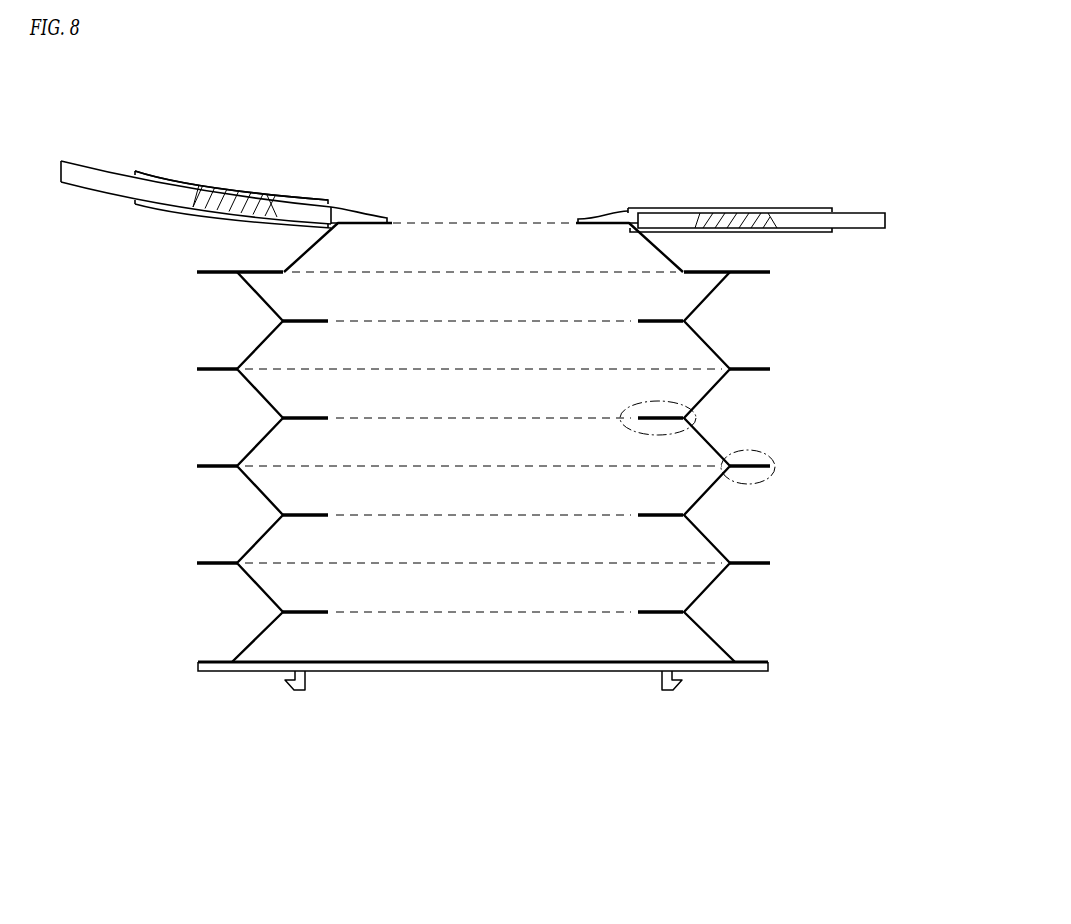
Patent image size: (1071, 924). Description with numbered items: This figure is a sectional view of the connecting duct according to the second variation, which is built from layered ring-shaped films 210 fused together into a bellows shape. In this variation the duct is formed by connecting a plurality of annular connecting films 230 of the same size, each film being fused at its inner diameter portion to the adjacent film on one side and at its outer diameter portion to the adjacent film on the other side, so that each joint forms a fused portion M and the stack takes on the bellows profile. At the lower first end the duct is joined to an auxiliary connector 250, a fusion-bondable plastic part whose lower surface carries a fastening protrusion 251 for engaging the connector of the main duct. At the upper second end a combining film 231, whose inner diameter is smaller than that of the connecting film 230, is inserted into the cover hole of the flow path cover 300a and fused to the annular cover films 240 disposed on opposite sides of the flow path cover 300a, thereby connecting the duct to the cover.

The film 210 is at (470, 524).
The connecting film 230 is at (250, 383).
The combining film 231 is at (303, 250).
The cover film 240 is at (822, 208).
The auxiliary connector 250 is at (222, 669).
The fastening protrusion 251 is at (298, 690).
The flow path cover 300a is at (873, 220).
The fused portion M is at (230, 207).